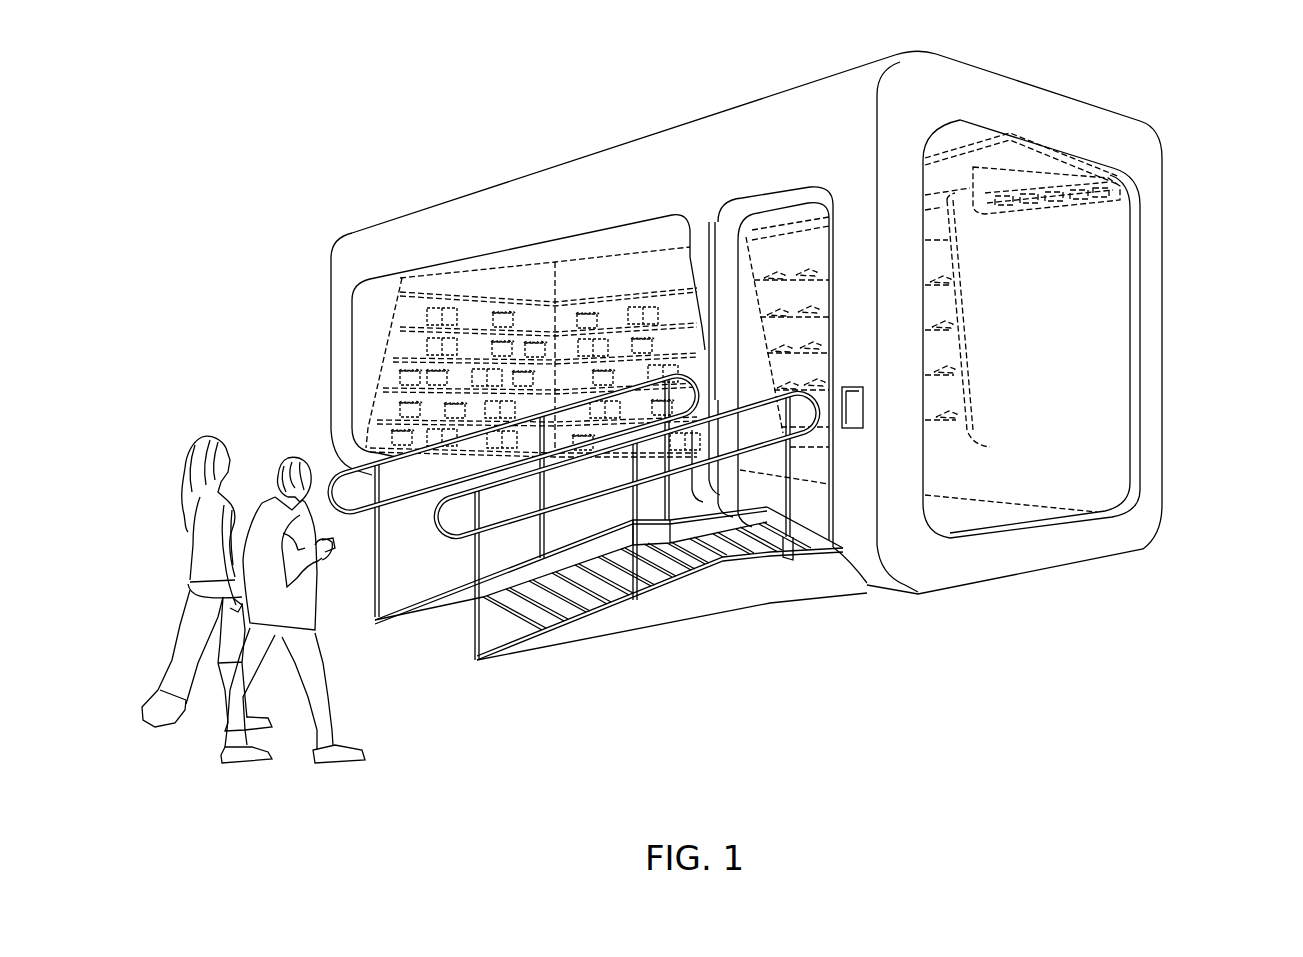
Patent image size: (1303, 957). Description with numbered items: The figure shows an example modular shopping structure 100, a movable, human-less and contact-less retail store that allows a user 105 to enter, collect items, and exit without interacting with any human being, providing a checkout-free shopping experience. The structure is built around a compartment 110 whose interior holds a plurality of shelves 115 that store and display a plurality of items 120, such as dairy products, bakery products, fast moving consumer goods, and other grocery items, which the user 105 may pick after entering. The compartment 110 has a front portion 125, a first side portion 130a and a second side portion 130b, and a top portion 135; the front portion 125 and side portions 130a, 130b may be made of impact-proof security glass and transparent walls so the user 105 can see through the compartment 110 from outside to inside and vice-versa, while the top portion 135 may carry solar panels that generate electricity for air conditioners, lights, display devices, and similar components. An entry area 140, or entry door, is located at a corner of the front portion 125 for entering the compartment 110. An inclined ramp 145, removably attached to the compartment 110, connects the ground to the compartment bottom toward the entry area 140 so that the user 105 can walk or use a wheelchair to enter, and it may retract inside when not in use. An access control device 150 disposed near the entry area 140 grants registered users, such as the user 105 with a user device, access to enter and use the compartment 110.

The modular shopping structure 100 is at (173, 140).
The user 105 is at (205, 437).
The compartment 110 is at (1190, 228).
The plurality of shelves 115 is at (538, 330).
The plurality of items 120 is at (452, 317).
The front portion 125 is at (667, 232).
The first side portion 130a is at (330, 337).
The second side portion 130b is at (1013, 518).
The top portion 135 is at (590, 157).
The entry area 140 is at (808, 463).
The inclined ramp 145 is at (597, 607).
The access control device 150 is at (853, 410).